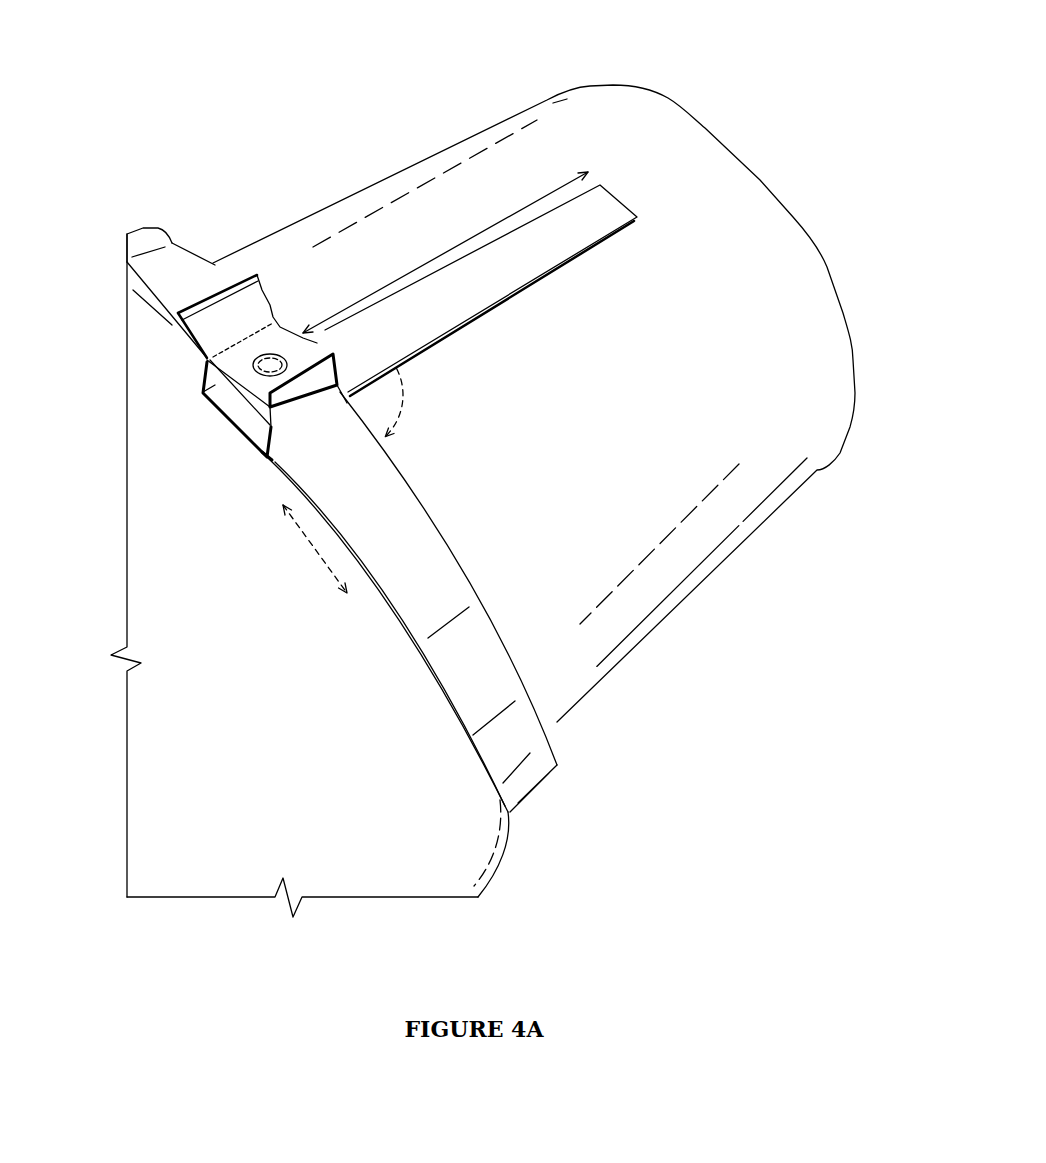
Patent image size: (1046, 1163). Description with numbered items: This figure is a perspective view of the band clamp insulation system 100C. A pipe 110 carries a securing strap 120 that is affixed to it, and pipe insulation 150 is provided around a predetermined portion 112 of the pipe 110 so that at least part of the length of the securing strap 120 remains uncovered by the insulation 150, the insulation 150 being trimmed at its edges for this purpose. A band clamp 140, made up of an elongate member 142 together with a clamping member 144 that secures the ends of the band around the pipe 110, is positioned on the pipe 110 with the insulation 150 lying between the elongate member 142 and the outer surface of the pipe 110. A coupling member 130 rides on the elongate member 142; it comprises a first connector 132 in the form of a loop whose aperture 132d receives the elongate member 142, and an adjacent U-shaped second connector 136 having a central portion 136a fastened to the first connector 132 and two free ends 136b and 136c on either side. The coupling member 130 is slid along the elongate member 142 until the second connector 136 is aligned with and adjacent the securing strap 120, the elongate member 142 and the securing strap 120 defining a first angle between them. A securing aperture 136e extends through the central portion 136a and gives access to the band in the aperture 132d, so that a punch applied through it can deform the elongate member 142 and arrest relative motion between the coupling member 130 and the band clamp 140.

The band clamp insulation system 100C is at (815, 128).
The pipe 110 is at (695, 555).
The predetermined portion 112 is at (210, 848).
The securing strap 120 is at (560, 237).
The coupling member 130 is at (177, 331).
The first connector 132 is at (159, 446).
The aperture 132d is at (264, 457).
The second connector 136 is at (177, 278).
The central portion 136a is at (232, 358).
The free end 136b is at (233, 312).
The free end 136c is at (320, 372).
The securing aperture 136e is at (267, 352).
The band clamp 140 is at (527, 762).
The elongate member 142 is at (177, 280).
The clamping member 144 is at (153, 240).
The pipe insulation 150 is at (223, 723).